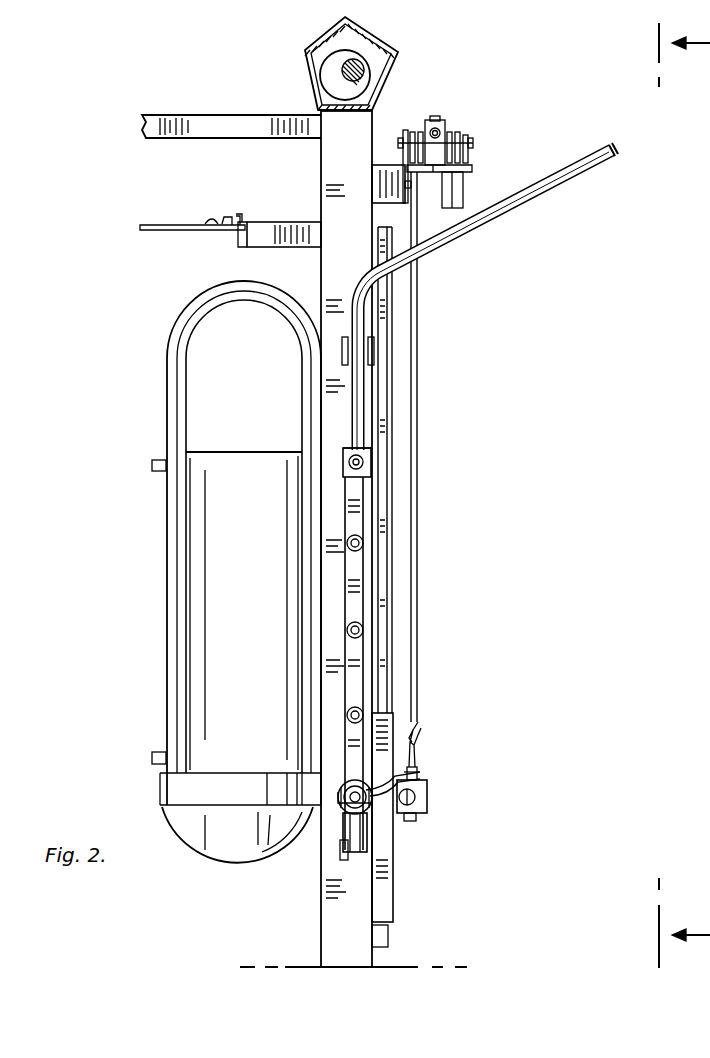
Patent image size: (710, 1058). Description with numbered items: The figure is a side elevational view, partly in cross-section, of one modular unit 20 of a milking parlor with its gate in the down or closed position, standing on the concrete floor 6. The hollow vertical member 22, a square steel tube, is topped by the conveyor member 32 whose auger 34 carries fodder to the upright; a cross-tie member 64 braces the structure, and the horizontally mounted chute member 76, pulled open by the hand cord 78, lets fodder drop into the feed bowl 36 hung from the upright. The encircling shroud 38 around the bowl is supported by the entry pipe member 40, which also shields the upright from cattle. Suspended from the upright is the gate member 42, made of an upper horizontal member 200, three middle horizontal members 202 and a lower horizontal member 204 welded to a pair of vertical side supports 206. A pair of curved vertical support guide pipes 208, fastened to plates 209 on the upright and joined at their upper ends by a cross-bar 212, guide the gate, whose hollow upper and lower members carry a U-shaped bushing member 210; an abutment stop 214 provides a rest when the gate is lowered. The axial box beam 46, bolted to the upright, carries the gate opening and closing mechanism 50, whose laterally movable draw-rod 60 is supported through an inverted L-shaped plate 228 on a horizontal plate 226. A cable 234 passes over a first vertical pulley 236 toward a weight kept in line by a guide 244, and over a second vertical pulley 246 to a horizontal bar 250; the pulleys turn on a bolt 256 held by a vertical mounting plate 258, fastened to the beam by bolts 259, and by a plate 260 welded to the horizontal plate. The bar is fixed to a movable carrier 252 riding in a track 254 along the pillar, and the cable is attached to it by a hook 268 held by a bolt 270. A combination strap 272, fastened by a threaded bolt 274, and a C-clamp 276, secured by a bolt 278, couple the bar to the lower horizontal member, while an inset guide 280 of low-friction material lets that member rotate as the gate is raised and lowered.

The concrete floor 6 is at (123, 113).
The modular unit 20 is at (424, 80).
The hollow vertical member 22 is at (312, 138).
The conveyor member 32 is at (322, 46).
The auger 34 is at (320, 78).
The feed bowl 36 is at (228, 853).
The encircling shroud 38 is at (232, 570).
The entry pipe member 40 is at (212, 296).
The gate member 42 is at (366, 500).
The axial box beam 46 is at (373, 176).
The gate opening and closing mechanism 50 is at (472, 105).
The draw-rod 60 is at (440, 128).
The cross-tie member 64 is at (219, 125).
The chute member 76 is at (300, 240).
The hand cord 78 is at (187, 225).
The upper horizontal member 200 is at (372, 471).
The middle horizontal member 202 is at (363, 545).
The lower horizontal member 204 is at (346, 788).
The vertical side support 206 is at (358, 650).
The vertical support guide pipe 208 is at (597, 166).
The plate 209 is at (342, 350).
The U-shaped bushing member 210 is at (370, 459).
The cross-bar 212 is at (620, 146).
The abutment stop 214 is at (333, 840).
The horizontal plate 226 is at (462, 200).
The inverted L-shaped plate 228 is at (434, 172).
The cable 234 is at (478, 176).
The first vertical pulley 236 is at (455, 140).
The guide 244 is at (452, 200).
The second vertical pulley 246 is at (427, 133).
The horizontal bar 250 is at (425, 812).
The movable carrier 252 is at (390, 877).
The track 254 is at (383, 318).
The bolt 256 is at (473, 148).
The vertical mounting plate 258 is at (404, 130).
The bolt 259 is at (404, 186).
The plate 260 is at (468, 146).
The hook 268 is at (416, 748).
The bolt 270 is at (414, 822).
The combination strap 272 is at (428, 790).
The threaded bolt 274 is at (418, 767).
The C-clamp 276 is at (418, 780).
The bolt 278 is at (348, 778).
The inset guide 280 is at (352, 802).